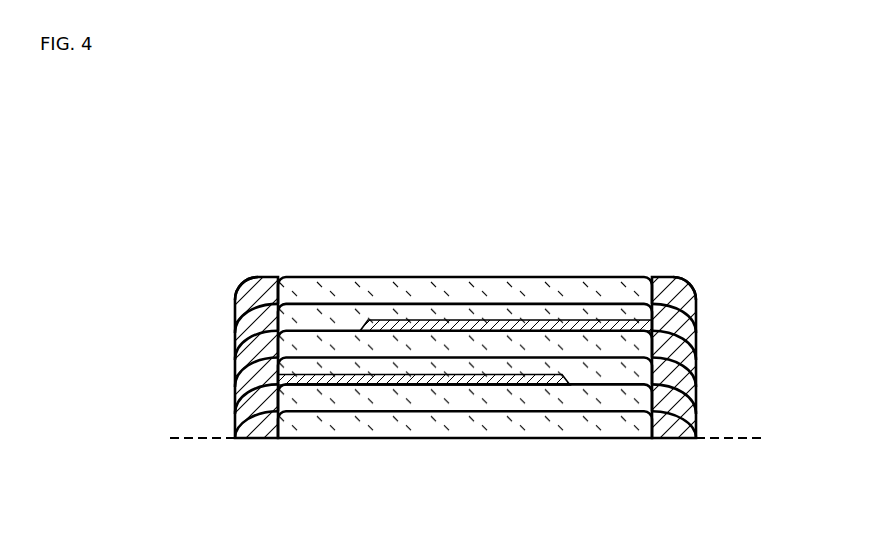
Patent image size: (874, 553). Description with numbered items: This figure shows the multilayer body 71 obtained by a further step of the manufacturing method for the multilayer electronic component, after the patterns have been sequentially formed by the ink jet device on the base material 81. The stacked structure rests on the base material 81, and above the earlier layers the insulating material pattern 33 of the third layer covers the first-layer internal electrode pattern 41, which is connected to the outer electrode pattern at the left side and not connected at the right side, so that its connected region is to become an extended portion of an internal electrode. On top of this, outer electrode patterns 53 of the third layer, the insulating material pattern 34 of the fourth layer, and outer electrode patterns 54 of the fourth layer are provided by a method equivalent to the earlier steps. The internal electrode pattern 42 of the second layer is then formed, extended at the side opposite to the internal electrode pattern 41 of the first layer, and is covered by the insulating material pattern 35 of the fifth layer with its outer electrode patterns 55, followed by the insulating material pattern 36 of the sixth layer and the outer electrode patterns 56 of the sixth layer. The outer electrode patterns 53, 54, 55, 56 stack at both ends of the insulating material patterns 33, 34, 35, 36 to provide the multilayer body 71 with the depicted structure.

The multilayer body 71 is at (173, 158).
The insulating material pattern of a third layer 33 is at (604, 358).
The insulating material pattern of a fourth layer 34 is at (337, 331).
The insulating material pattern of a fifth layer 35 is at (413, 303).
The insulating material pattern of a sixth layer 36 is at (481, 277).
The internal electrode pattern of the first layer 41 is at (537, 385).
The internal electrode pattern of the second layer 42 is at (449, 331).
The outer electrode patterns of the third layer 53 is at (233, 360).
The outer electrode patterns of the fourth layer 54 is at (233, 333).
The outer electrode patterns of the fifth layer 55 is at (235, 297).
The outer electrode patterns of the sixth layer 56 is at (258, 282).
The base material 81 is at (198, 437).